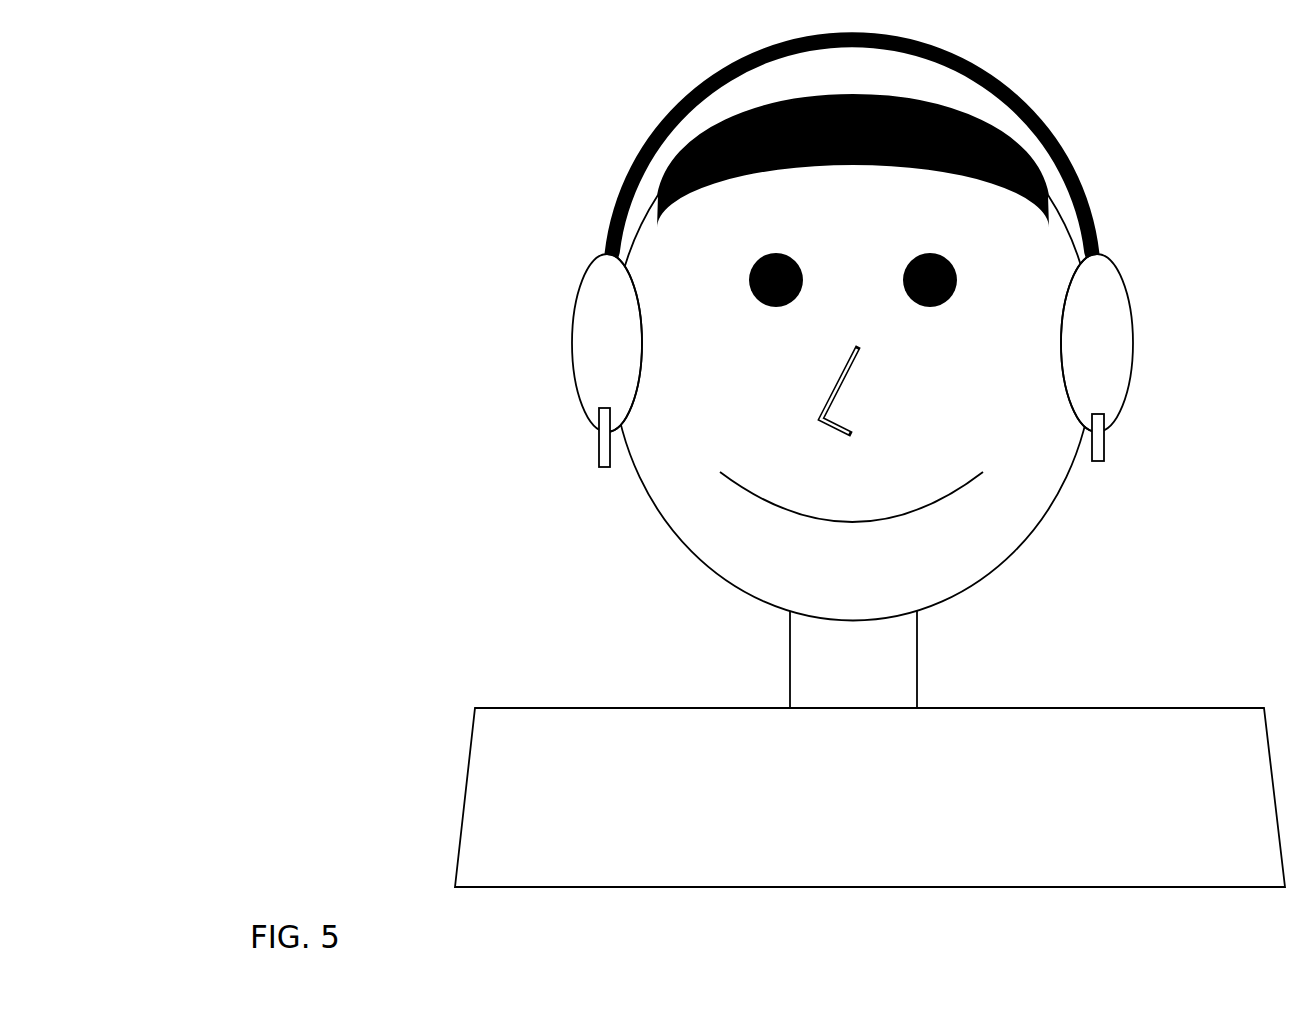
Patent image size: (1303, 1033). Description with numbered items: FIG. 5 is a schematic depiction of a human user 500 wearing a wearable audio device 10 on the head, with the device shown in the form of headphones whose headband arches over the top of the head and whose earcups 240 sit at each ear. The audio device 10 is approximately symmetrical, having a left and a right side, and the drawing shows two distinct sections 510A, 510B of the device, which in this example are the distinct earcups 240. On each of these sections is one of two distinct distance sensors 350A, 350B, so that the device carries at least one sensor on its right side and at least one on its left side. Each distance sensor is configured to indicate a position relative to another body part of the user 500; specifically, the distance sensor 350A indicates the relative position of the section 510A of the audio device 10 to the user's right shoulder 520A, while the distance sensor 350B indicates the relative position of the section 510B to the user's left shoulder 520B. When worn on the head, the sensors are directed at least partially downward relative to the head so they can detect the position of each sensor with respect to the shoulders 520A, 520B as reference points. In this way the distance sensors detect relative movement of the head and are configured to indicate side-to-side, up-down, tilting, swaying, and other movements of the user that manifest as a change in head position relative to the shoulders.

The wearable audio device 10 is at (1070, 111).
The human user 500 is at (769, 459).
The section of the audio device 510A is at (532, 353).
The section of the audio device 510B is at (1148, 387).
The earcup 240 is at (652, 305).
The distance sensor 350A is at (588, 448).
The distance sensor 350B is at (1113, 447).
The right shoulder 520A is at (555, 685).
The left shoulder 520B is at (1178, 695).